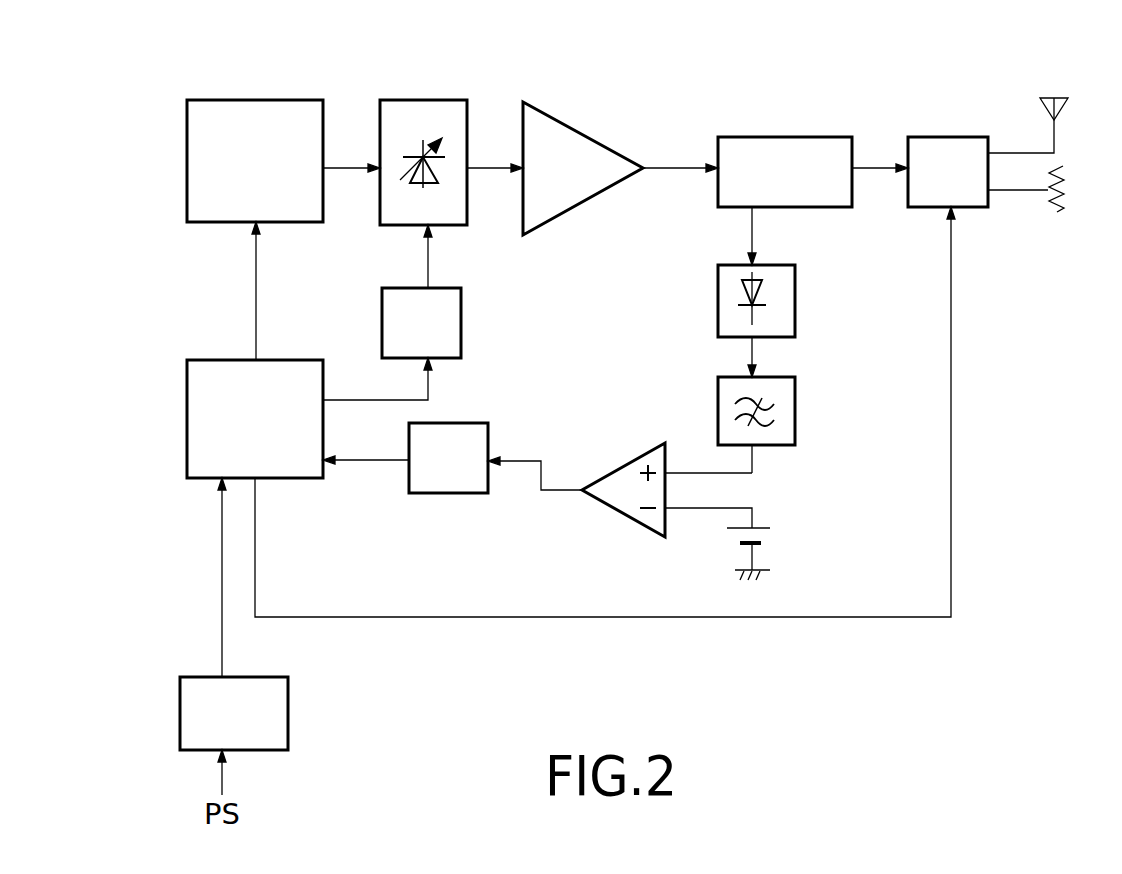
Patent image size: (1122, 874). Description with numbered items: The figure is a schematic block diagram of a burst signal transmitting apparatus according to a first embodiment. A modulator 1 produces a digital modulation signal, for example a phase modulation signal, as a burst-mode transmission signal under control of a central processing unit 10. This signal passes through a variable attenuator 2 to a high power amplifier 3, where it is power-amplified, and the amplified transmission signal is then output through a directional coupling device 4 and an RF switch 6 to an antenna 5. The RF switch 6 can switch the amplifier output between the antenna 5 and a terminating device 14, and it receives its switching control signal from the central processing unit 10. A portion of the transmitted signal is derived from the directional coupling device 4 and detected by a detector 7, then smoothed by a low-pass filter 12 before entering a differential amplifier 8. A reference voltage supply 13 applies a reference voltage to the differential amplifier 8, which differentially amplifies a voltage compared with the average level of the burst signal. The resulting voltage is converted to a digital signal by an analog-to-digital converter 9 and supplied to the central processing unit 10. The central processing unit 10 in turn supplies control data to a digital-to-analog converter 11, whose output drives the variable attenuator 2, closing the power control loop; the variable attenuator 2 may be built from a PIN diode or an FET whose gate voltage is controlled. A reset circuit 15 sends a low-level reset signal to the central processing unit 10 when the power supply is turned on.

The modulator 1 is at (290, 100).
The variable attenuator 2 is at (417, 100).
The high power amplifier 3 is at (575, 129).
The directional coupling device 4 is at (789, 137).
The antenna 5 is at (1048, 96).
The RF switch 6 is at (947, 137).
The detector 7 is at (795, 298).
The differential amplifier 8 is at (618, 462).
The analog-to-digital converter 9 is at (471, 423).
The central processing unit 10 is at (290, 360).
The digital-to-analog converter 11 is at (461, 322).
The low-pass filter 12 is at (795, 410).
The reference voltage supply 13 is at (767, 536).
The terminating device 14 is at (1057, 214).
The reset circuit 15 is at (288, 706).